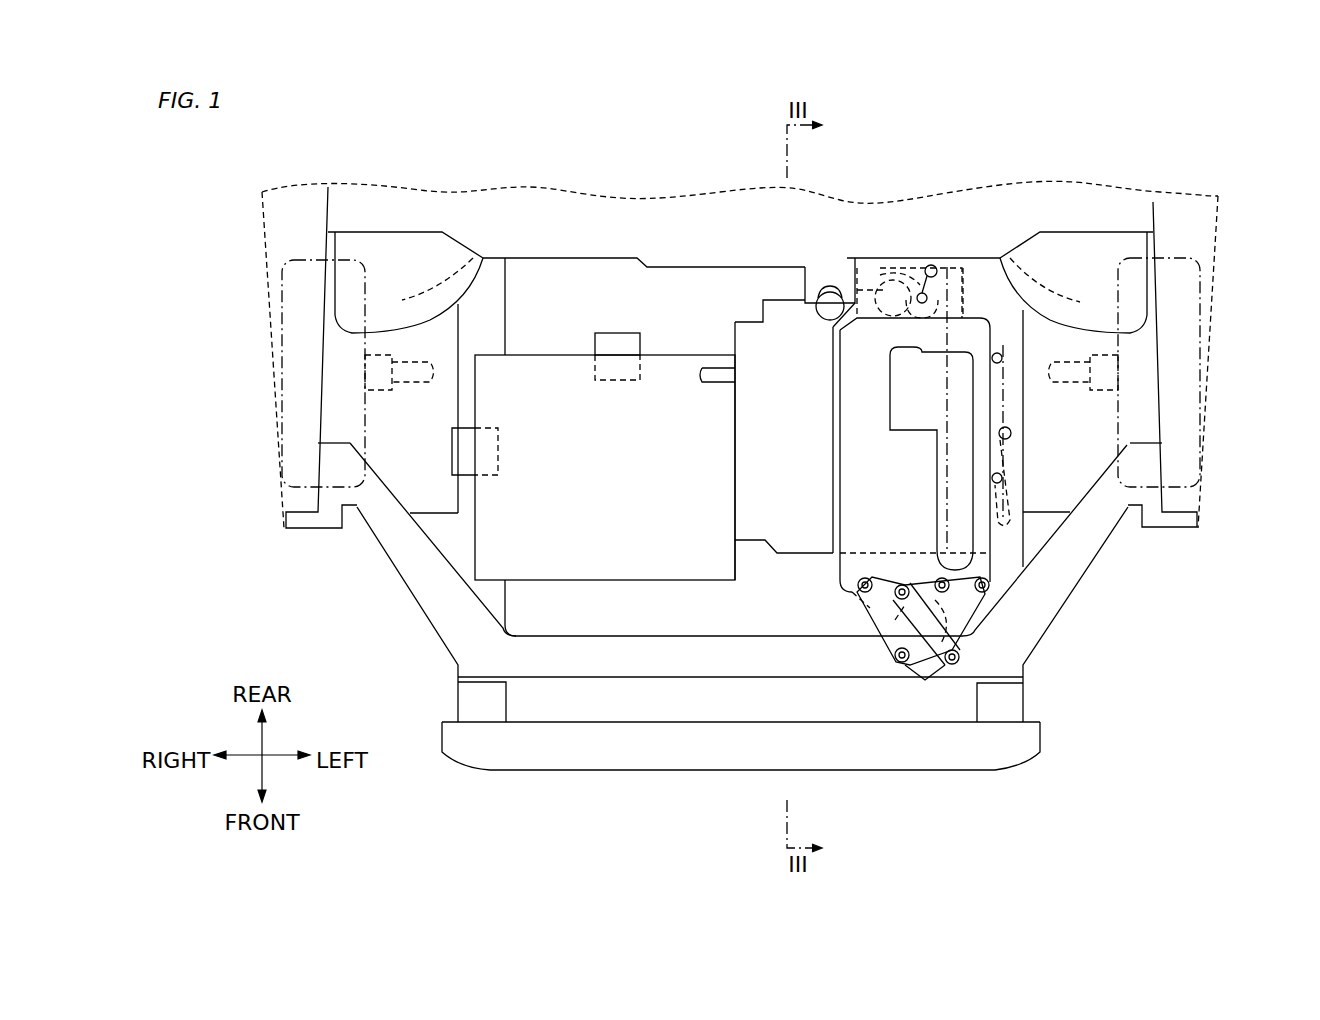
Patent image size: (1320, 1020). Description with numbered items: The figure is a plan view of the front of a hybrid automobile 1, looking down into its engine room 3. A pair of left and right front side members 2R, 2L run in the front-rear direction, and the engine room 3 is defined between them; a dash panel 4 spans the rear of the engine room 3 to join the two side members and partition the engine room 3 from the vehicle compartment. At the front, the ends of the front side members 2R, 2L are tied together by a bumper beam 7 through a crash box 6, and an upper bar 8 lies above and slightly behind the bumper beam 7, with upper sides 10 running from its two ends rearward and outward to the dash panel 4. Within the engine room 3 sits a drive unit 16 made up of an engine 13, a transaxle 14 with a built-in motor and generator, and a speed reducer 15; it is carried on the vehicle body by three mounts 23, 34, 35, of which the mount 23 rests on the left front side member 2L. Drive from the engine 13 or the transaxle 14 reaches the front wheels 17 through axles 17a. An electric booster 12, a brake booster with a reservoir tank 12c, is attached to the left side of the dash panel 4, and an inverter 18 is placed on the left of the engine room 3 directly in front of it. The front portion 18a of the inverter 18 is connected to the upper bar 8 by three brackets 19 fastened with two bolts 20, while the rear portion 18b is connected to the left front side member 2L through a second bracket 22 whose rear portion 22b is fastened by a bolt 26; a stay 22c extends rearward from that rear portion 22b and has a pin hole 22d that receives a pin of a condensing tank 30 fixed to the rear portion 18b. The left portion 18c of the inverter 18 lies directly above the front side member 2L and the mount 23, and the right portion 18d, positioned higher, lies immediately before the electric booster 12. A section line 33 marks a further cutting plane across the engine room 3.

The hybrid automobile 1 is at (1043, 161).
The right front side member 2R is at (445, 537).
The left front side member 2L is at (1045, 538).
The engine room 3 is at (661, 297).
The dash panel 4 is at (540, 254).
The crash box 6 is at (470, 698).
The bumper beam 7 is at (864, 758).
The upper bar 8 is at (680, 660).
The upper side 10 is at (388, 540).
The electric booster 12 is at (806, 297).
The reservoir tank 12c is at (805, 276).
The engine 13 is at (725, 567).
The transaxle 14 is at (862, 555).
The speed reducer 15 is at (780, 542).
The drive unit 16 is at (683, 617).
The front wheels 17 is at (280, 328).
The axles 17a is at (408, 396).
The inverter 18 is at (832, 405).
The front portion 18a is at (853, 600).
The rear portion 18b is at (999, 352).
The left portion 18c is at (1005, 492).
The right portion 18d is at (839, 466).
The brackets 19 is at (898, 662).
The bolts 20 is at (925, 680).
The second bracket 22 is at (882, 296).
The rear portion 22b is at (893, 290).
The stay 22c is at (925, 293).
The pin hole 22d is at (947, 286).
The mount 23 is at (1008, 402).
The bolt 26 is at (893, 280).
The condensing tank 30 is at (1040, 280).
The panel top portion 33 is at (703, 228).
The mount 34 is at (615, 332).
The mount 35 is at (452, 452).